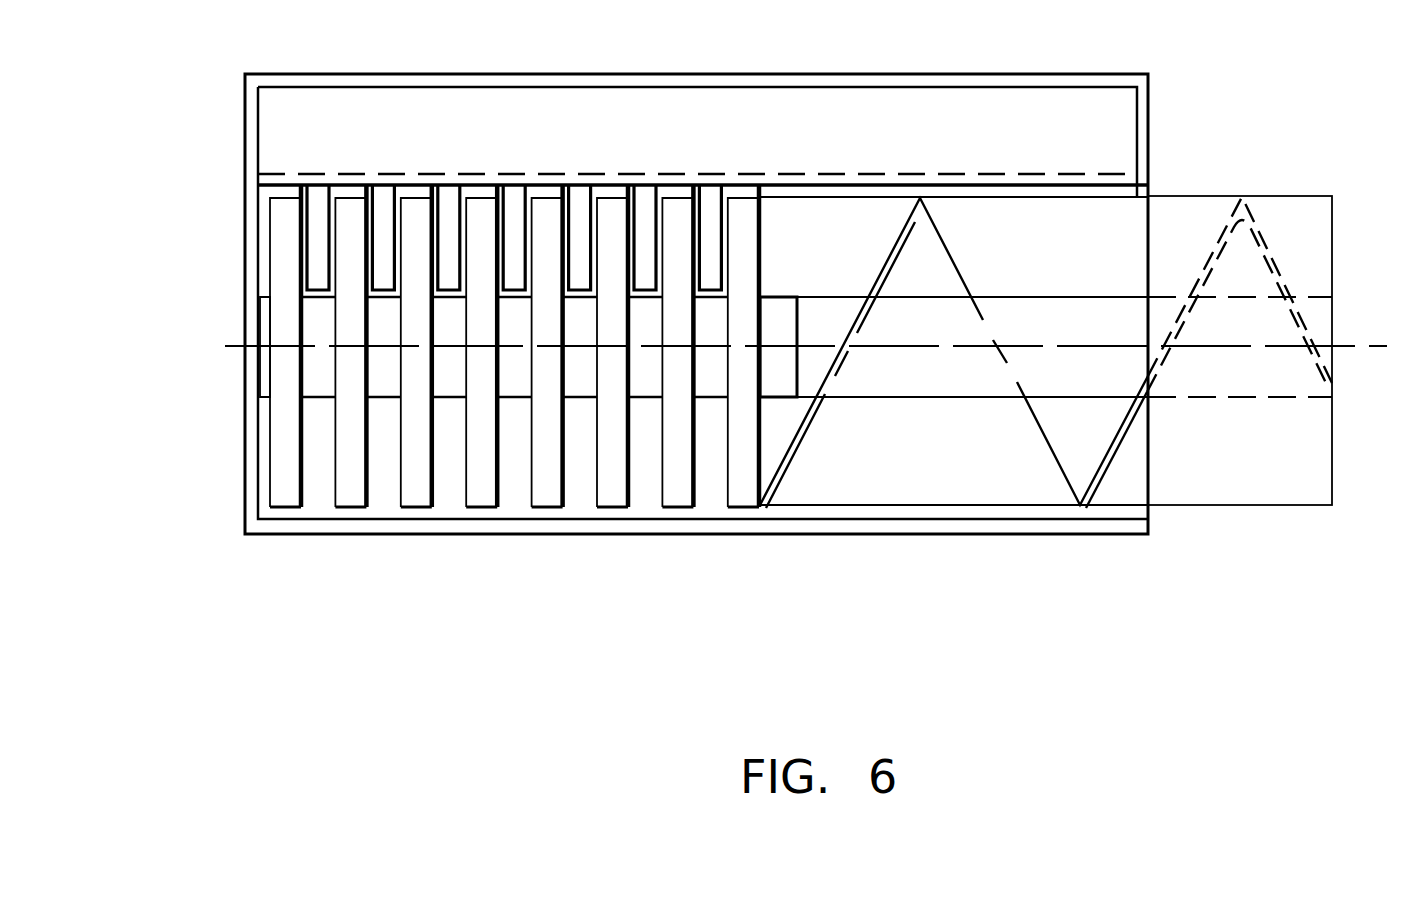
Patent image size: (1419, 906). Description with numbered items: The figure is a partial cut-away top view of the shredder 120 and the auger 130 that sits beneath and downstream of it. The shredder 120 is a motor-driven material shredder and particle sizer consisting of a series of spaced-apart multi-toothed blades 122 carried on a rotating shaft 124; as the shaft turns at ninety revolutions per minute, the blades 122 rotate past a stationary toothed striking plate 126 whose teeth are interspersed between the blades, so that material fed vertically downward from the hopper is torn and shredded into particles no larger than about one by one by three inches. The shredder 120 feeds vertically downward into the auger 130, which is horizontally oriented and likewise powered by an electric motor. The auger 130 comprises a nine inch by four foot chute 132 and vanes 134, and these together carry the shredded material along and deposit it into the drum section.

The shredder 120 is at (272, 640).
The multi-toothed blades 122 is at (420, 493).
The rotating shaft 124 is at (272, 355).
The toothed striking plate 126 is at (473, 110).
The auger 130 is at (757, 573).
The chute 132 is at (1225, 505).
The vanes 134 is at (1110, 453).